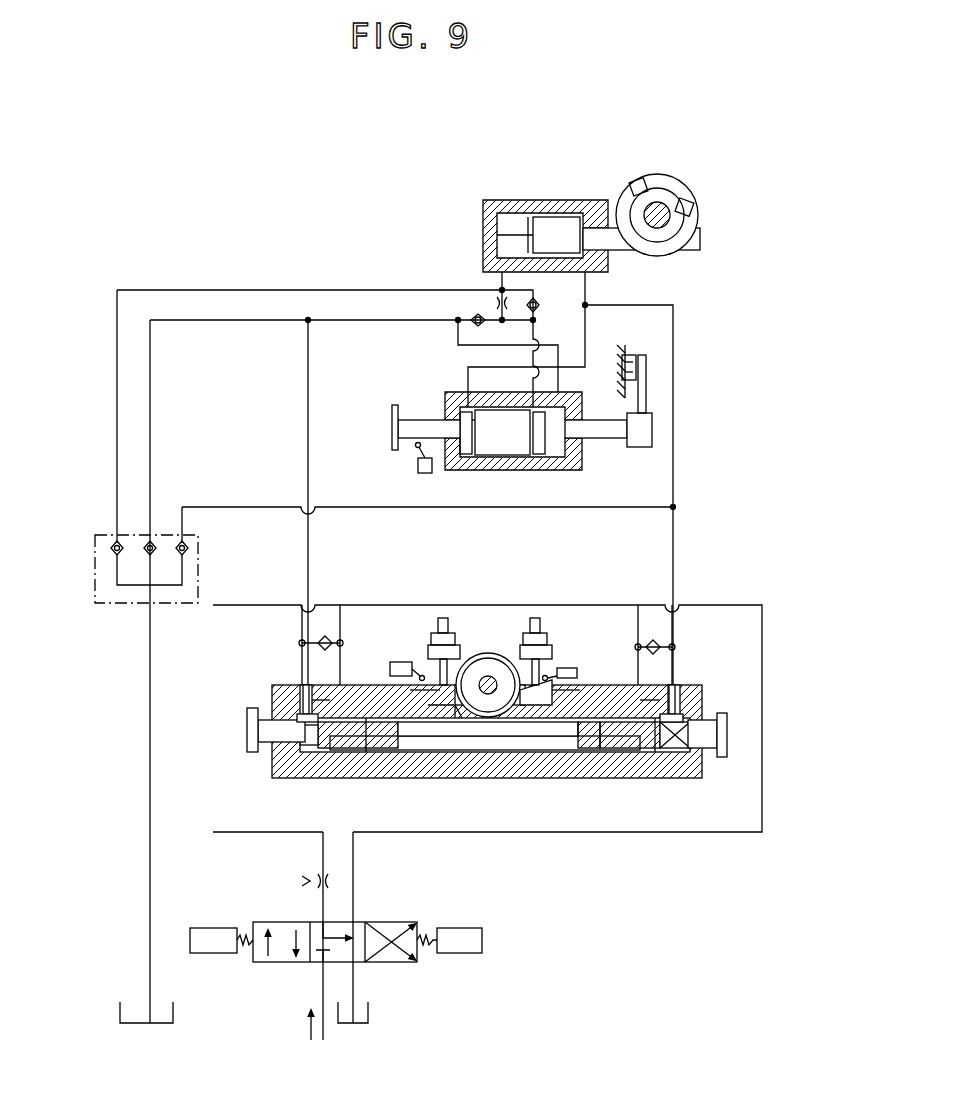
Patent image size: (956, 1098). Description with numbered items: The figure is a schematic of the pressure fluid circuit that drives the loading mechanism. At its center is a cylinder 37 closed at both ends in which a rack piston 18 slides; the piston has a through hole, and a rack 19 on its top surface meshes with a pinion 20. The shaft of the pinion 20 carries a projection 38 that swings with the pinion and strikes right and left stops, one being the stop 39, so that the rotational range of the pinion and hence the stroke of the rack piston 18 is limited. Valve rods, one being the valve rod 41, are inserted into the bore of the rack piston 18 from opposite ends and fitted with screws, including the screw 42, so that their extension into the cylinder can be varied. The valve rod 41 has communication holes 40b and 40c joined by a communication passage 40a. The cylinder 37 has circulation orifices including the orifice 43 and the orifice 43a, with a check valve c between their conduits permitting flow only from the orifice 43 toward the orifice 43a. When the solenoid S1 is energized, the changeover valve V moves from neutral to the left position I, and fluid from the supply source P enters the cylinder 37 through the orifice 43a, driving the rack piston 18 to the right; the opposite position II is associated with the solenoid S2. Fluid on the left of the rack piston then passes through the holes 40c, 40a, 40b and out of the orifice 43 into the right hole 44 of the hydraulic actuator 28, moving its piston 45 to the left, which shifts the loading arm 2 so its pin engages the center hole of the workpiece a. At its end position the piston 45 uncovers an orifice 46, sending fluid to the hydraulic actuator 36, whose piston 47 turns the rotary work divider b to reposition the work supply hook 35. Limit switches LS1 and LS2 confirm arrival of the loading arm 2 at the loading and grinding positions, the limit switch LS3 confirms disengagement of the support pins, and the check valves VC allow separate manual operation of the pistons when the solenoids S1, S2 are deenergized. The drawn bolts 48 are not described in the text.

The hydraulic actuator 36 is at (504, 200).
The piston 47 is at (560, 230).
The work supply hook 35 is at (640, 184).
The rotary work divider b is at (666, 190).
The hydraulic actuator 28 is at (503, 470).
The piston 45 is at (515, 442).
The orifice 46 is at (530, 392).
The right hole 44 is at (560, 394).
The loading arm 2 is at (648, 392).
The workpiece a is at (619, 352).
The limit switch LS3 is at (432, 473).
The check valves for individual operation VC is at (117, 603).
The check valve c is at (332, 630).
The port d is at (660, 632).
The cylinder 37 is at (504, 770).
The rack piston 18 is at (462, 750).
The communication passage 40a is at (358, 770).
The communication hole 40b is at (307, 760).
The communication hole 40c is at (392, 752).
The screw 42 is at (267, 748).
The circulation orifice 43 is at (300, 704).
The circulation orifice 43a is at (342, 700).
The valve rod 41 is at (366, 718).
The pinion 20 is at (488, 652).
The rack 19 is at (452, 708).
The projection 38 is at (555, 692).
The bolt 48 is at (443, 618).
The stop 39 is at (426, 640).
The limit switch LS1 is at (398, 660).
The limit switch LS2 is at (569, 668).
The changeover valve V is at (363, 924).
The solenoid S1 is at (213, 940).
The solenoid S2 is at (459, 940).
The left position I is at (279, 983).
The valve position II is at (393, 983).
The supply source P is at (309, 1039).